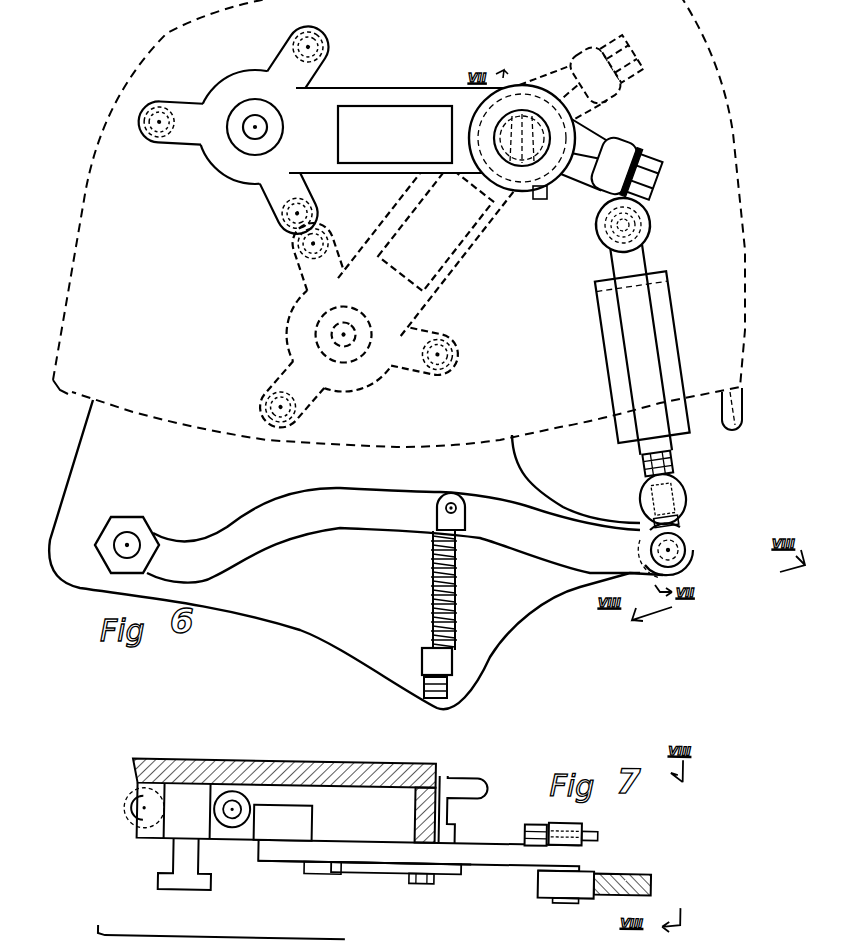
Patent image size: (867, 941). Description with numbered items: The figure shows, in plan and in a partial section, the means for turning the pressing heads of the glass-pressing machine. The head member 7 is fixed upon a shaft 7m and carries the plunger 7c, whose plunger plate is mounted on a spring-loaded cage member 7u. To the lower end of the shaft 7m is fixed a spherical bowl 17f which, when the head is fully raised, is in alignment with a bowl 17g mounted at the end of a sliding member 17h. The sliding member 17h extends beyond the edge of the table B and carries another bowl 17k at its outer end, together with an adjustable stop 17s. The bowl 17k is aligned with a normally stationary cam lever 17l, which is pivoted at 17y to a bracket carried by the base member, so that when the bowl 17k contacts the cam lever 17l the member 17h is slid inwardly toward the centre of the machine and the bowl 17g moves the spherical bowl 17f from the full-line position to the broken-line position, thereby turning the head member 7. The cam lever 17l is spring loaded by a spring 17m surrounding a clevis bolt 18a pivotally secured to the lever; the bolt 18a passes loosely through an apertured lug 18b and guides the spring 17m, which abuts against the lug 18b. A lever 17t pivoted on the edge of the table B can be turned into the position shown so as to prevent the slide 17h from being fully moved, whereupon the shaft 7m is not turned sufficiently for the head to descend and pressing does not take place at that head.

In FIG. 6, the head member 7 is at (390, 88).
In FIG. 6, the plunger 7c is at (255, 125).
In FIG. 6, the cage member 7u is at (312, 47).
In FIG. 6, the shaft 7m is at (506, 125).
In FIG. 7, the shaft 7m is at (186, 856).
In FIG. 6, the spherical bowl 17f is at (600, 78).
In FIG. 7, the spherical bowl 17f is at (130, 810).
In FIG. 6, the bowl 17g is at (645, 222).
In FIG. 7, the bowl 17g is at (302, 816).
In FIG. 6, the sliding member 17h is at (658, 355).
In FIG. 7, the sliding member 17h is at (288, 851).
In FIG. 6, the bowl 17k is at (675, 382).
In FIG. 7, the bowl 17k is at (450, 870).
In FIG. 6, the cam lever 17l is at (371, 554).
In FIG. 7, the cam lever 17l is at (507, 861).
In FIG. 6, the spring 17m is at (432, 604).
In FIG. 6, the adjustable stop 17s is at (680, 466).
In FIG. 7, the adjustable stop 17s is at (570, 818).
In FIG. 6, the lever 17t is at (744, 398).
In FIG. 7, the lever 17t is at (448, 828).
In FIG. 6, the pivot 17y is at (130, 545).
In FIG. 6, the clevis bolt 18a is at (462, 520).
In FIG. 6, the apertured lug 18b is at (440, 665).
In FIG. 6, the table B is at (392, 223).
In FIG. 7, the table B is at (312, 760).